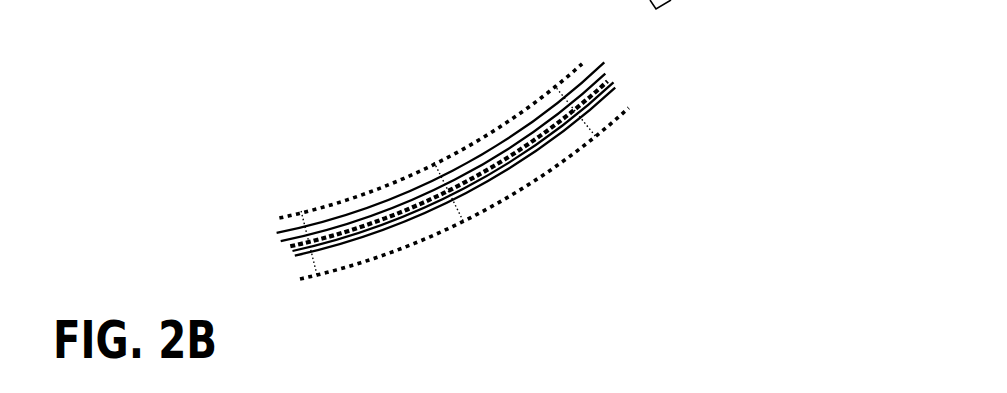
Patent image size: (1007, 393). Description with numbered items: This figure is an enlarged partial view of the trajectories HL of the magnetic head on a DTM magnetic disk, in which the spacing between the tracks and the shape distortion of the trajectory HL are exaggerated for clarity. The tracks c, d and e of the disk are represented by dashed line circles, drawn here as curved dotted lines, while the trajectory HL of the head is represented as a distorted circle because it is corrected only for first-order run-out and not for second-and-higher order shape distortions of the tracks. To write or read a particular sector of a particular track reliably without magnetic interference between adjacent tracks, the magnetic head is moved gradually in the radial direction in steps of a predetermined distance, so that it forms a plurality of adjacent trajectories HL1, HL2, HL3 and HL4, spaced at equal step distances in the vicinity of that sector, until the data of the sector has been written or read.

The trace trajectory HL is at (521, 140).
The adjacent trajectory HL1 is at (604, 62).
The adjacent trajectory HL2 is at (605, 74).
The adjacent trajectory HL3 is at (614, 82).
The adjacent trajectory HL4 is at (615, 88).
The track c is at (283, 218).
The track d is at (285, 251).
The track e is at (309, 279).